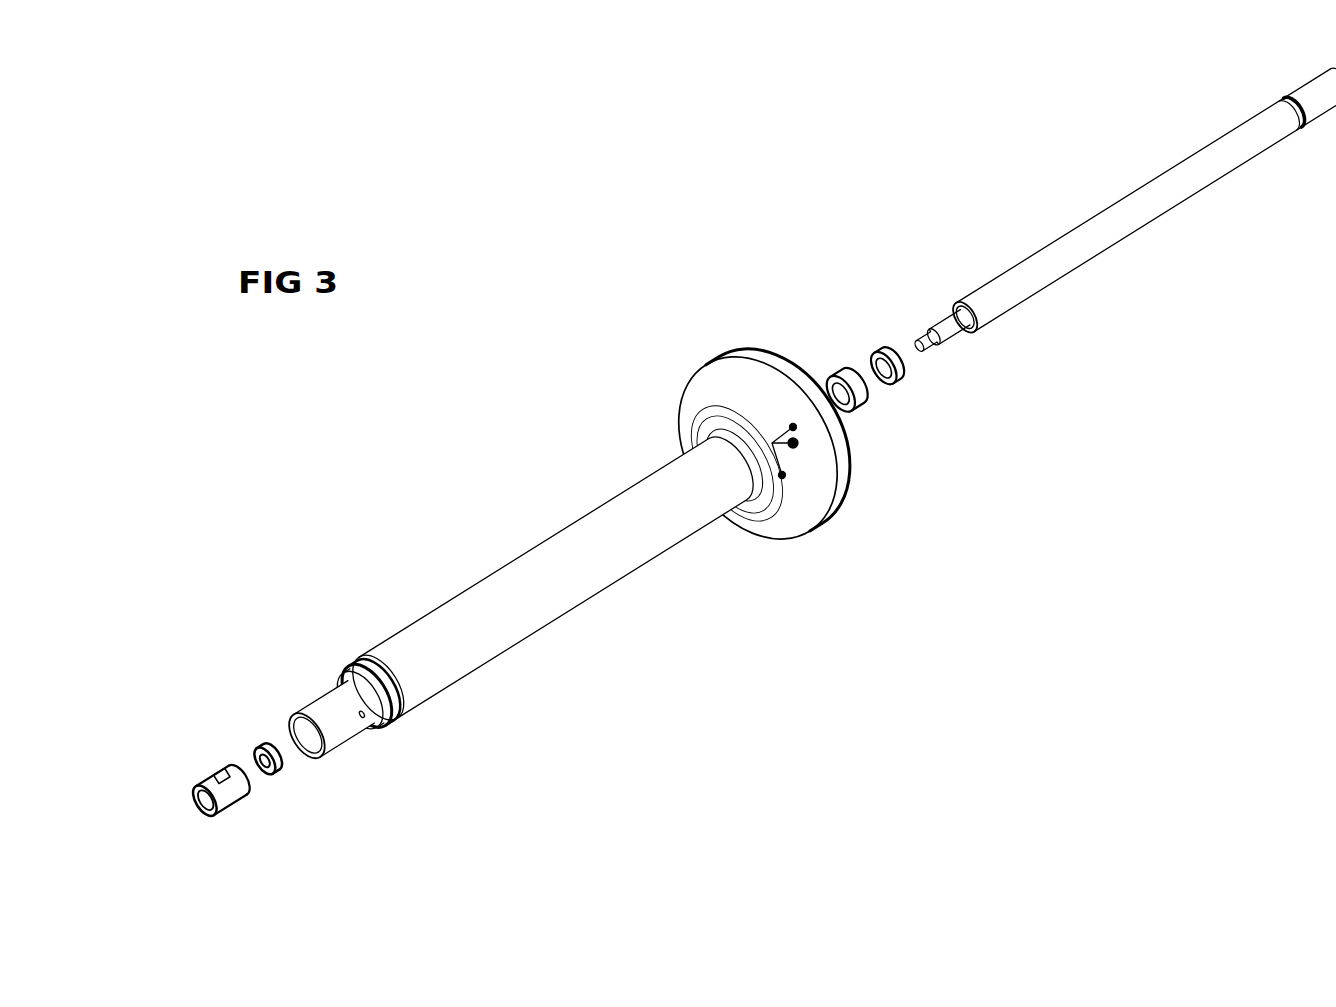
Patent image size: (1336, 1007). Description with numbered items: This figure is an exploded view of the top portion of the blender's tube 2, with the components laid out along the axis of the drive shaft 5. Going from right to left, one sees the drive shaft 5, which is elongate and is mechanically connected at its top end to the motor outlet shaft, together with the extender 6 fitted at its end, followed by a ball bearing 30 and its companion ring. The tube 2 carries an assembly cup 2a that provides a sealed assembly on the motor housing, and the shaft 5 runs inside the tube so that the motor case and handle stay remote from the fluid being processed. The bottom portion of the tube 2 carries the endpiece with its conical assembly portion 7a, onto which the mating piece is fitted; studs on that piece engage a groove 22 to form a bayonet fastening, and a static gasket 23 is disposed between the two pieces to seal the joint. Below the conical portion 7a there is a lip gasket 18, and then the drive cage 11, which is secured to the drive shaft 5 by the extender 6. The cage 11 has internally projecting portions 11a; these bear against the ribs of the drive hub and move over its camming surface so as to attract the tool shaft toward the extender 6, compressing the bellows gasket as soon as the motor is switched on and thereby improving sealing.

The tube 2 is at (577, 540).
The assembly cup 2a is at (817, 502).
The drive shaft 5 is at (1193, 185).
The extender 6 is at (962, 327).
The assembly portion 7a is at (318, 697).
The drive cage 11 is at (235, 795).
The internally projecting portions 11a is at (202, 815).
The lip gasket 18 is at (263, 748).
The groove 22 is at (380, 727).
The static gasket 23 is at (355, 665).
The ball bearing 30 is at (907, 380).